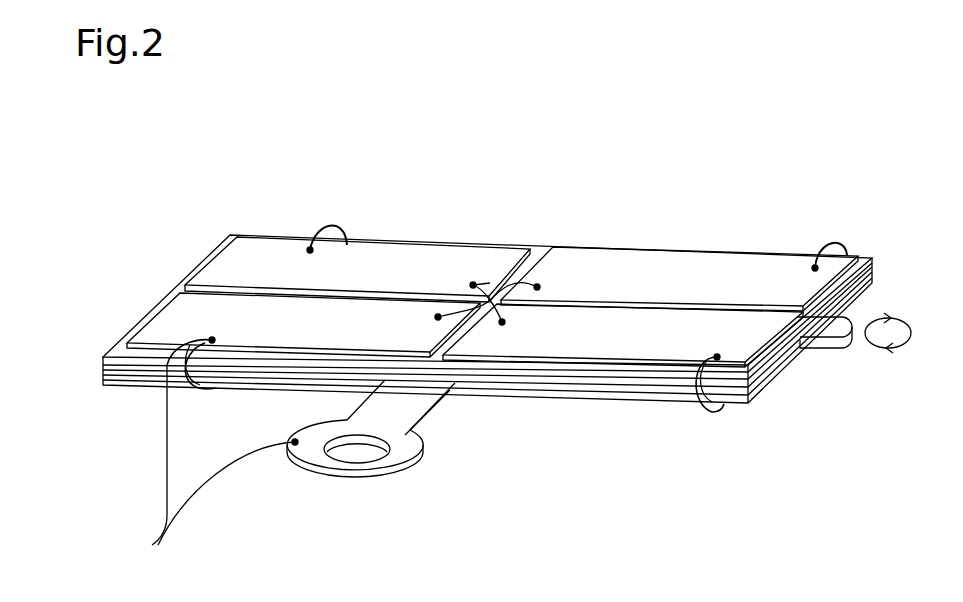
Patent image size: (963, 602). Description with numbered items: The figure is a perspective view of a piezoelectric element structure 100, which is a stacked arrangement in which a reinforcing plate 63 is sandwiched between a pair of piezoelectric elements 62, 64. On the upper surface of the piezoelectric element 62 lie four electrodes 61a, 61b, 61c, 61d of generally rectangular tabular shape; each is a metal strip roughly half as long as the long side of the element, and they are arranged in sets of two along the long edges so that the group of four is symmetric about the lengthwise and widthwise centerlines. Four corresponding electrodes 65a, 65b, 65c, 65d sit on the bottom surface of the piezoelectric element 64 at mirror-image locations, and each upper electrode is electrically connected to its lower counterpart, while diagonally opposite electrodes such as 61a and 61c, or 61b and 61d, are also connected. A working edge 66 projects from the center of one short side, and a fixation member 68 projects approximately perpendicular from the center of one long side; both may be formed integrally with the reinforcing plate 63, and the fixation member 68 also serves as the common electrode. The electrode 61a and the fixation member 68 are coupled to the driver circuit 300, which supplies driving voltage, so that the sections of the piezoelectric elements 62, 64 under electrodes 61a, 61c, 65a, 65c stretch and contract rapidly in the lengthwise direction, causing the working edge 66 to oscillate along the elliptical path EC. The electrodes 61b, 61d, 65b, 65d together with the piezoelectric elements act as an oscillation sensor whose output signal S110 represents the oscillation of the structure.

The piezoelectric element structure 100 is at (692, 228).
The electrode 61a is at (142, 335).
The electrode 61b is at (670, 350).
The electrode 61c is at (745, 262).
The electrode 61d is at (237, 247).
The piezoelectric element 62 is at (628, 380).
The reinforcing plate 63 is at (597, 390).
The piezoelectric element 64 is at (563, 397).
The electrode 65a is at (200, 382).
The electrode 65b is at (717, 401).
The electrode 65c is at (836, 246).
The electrode 65d is at (355, 230).
The working edge 66 is at (853, 313).
The fixation member 68 is at (403, 408).
The output signal S110 is at (310, 248).
The elliptical path EC is at (888, 348).
The driver circuit 300 is at (172, 472).